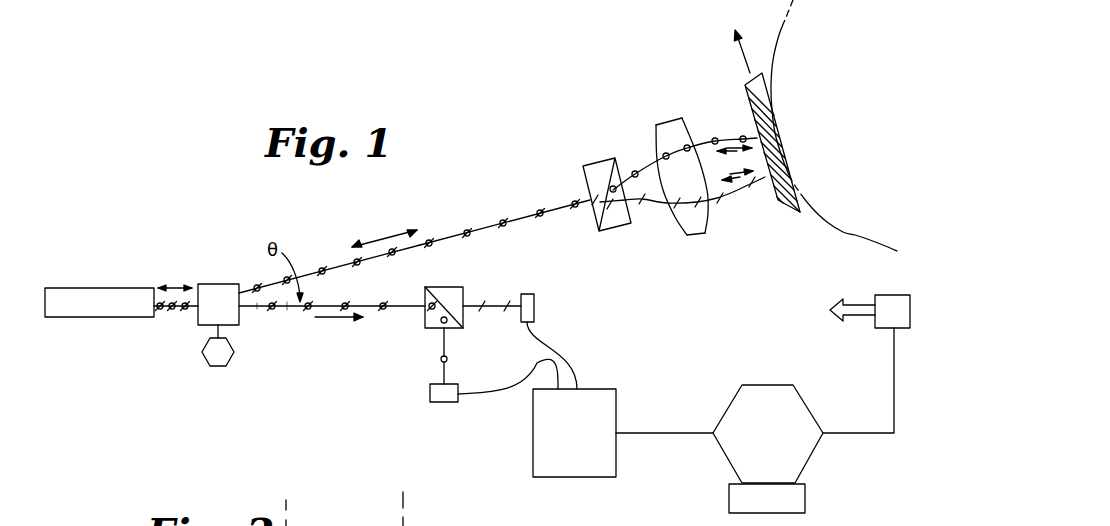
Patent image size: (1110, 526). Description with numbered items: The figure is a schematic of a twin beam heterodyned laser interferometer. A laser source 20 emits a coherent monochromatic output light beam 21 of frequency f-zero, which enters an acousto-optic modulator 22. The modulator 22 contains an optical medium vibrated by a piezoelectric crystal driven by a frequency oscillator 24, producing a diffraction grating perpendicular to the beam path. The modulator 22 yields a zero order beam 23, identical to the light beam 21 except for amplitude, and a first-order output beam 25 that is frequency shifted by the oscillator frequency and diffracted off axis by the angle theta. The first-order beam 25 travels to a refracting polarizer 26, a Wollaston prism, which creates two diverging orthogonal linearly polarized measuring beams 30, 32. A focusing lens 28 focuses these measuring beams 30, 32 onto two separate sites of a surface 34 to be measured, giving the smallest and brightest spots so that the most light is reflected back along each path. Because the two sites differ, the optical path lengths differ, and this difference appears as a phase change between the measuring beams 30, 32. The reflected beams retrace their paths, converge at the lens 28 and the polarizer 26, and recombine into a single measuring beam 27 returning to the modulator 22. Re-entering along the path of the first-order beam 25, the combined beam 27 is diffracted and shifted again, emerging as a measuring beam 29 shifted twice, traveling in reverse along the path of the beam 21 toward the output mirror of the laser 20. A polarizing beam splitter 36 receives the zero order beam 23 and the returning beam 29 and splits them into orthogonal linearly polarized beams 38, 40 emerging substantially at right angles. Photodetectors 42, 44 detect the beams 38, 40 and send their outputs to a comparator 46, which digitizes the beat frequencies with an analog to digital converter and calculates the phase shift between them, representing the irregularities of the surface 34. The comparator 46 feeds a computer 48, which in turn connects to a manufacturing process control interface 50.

The laser source 20 is at (106, 288).
The output light beam 21 is at (161, 312).
The acousto-optic modulator 22 is at (212, 284).
The zero order beam 23 is at (286, 310).
The frequency oscillator 24 is at (205, 362).
The first-order output beam 25 is at (308, 274).
The refracting polarizer 26 is at (600, 165).
The combined measuring beam 27 is at (487, 226).
The focusing lens 28 is at (690, 235).
The measuring beam 29 is at (190, 310).
The first polarized measuring beam 30 is at (733, 136).
The second polarized measuring beam 32 is at (730, 194).
The surface 34 is at (762, 188).
The polarizing beam splitter 36 is at (465, 287).
The polarized beam 38 is at (497, 307).
The polarized beam 40 is at (440, 340).
The photodetector 42 is at (534, 310).
The photodetector 44 is at (438, 402).
The comparator 46 is at (533, 432).
The computer 48 is at (763, 385).
The manufacturing process control interface 50 is at (890, 328).